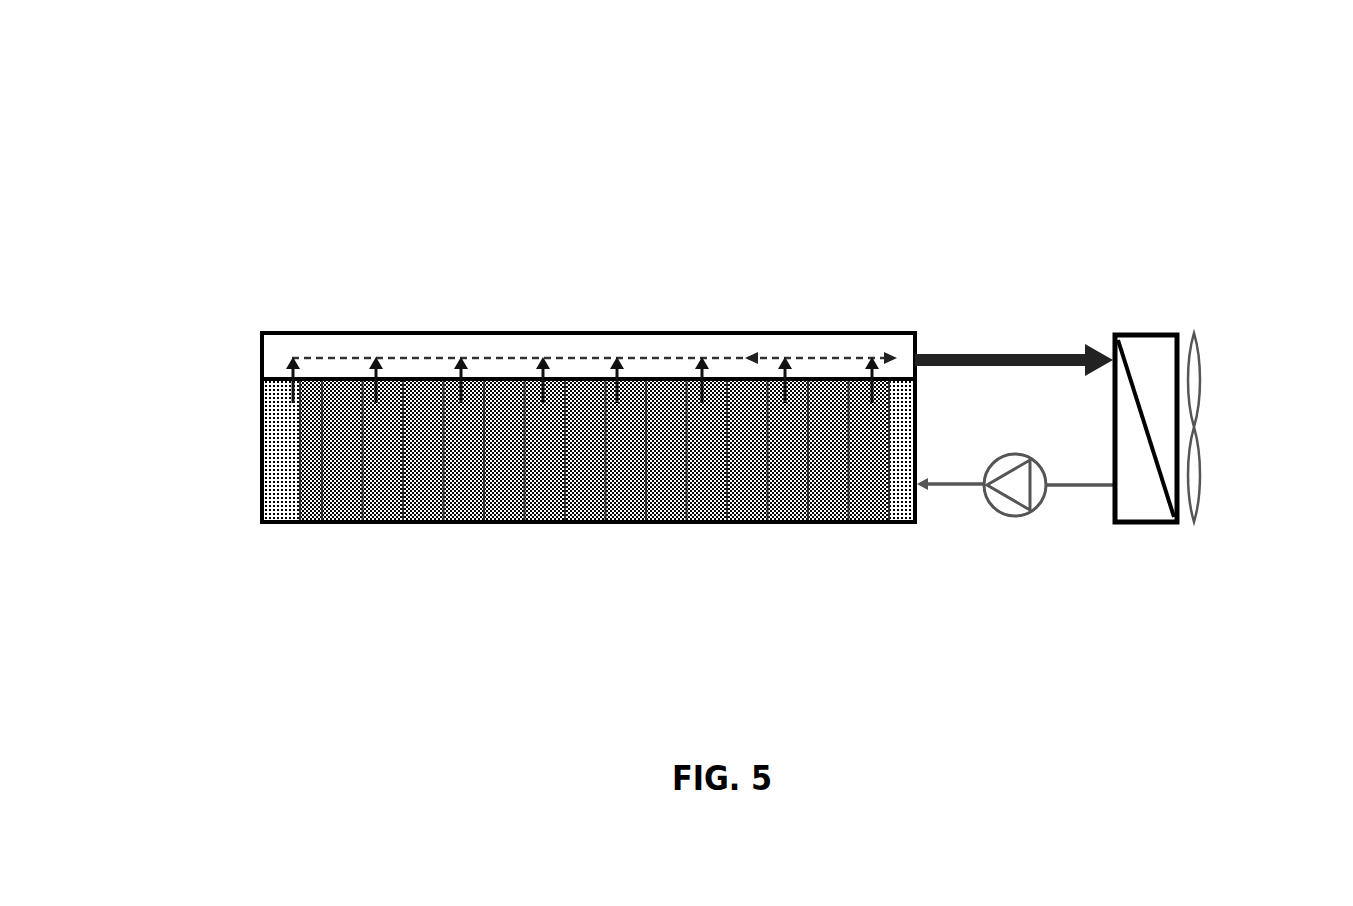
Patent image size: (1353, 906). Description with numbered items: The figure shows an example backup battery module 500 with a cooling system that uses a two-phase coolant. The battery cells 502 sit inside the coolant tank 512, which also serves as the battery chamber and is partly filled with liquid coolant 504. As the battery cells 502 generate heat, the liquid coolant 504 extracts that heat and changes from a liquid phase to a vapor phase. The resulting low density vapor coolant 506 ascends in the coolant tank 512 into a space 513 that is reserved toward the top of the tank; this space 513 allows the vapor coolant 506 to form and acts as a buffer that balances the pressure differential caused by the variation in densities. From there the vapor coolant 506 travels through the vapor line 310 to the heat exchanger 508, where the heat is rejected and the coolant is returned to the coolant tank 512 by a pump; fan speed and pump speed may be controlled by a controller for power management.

The backup battery module 500 is at (482, 66).
The battery cells 502 is at (545, 452).
The liquid coolant 504 is at (280, 484).
The vapor coolant 506 is at (795, 357).
The heat exchanger 508 is at (1168, 347).
The vapor line 310 is at (1032, 364).
The coolant tank 512 is at (687, 523).
The space 513 is at (311, 352).